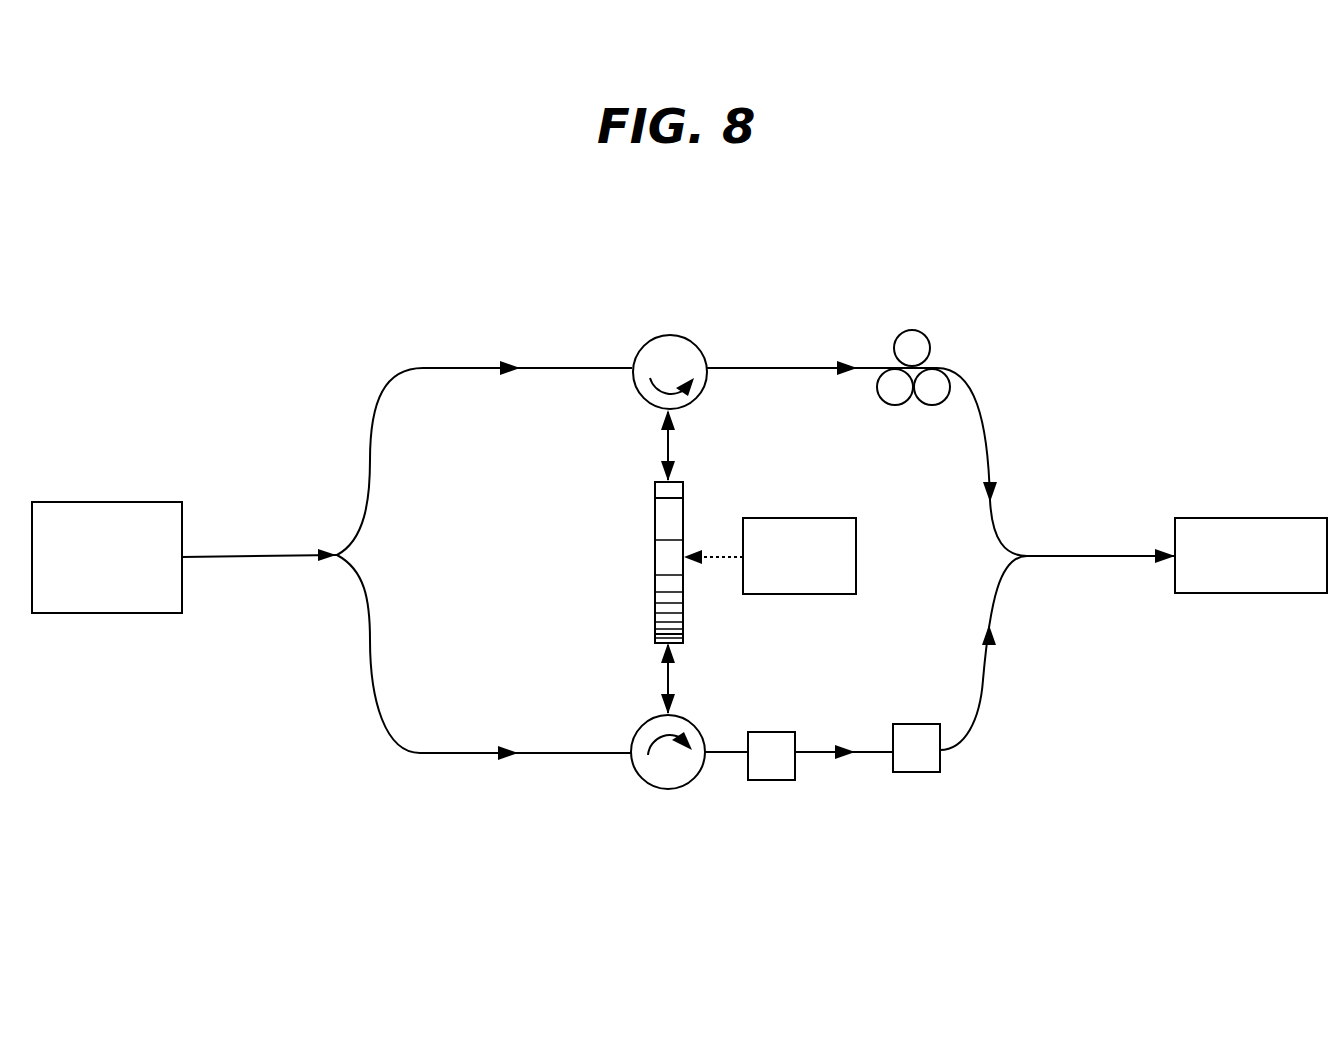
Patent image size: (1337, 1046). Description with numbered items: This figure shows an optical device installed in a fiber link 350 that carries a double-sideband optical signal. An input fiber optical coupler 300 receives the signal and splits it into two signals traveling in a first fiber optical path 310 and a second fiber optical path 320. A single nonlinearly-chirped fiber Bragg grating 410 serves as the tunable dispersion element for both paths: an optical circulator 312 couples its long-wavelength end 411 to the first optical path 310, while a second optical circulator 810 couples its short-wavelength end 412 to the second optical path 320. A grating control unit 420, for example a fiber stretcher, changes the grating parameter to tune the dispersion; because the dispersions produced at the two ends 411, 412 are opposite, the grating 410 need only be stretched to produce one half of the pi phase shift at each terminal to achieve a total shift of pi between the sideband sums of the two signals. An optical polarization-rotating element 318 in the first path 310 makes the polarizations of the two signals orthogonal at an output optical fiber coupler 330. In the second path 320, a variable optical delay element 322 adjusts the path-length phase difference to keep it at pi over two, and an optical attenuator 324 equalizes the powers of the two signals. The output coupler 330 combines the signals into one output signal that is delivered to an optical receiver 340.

The input fiber optical coupler 300 is at (337, 553).
The first fiber optical path 310 is at (385, 405).
The optical circulator 312 is at (641, 404).
The optical polarization-rotating element 318 is at (930, 350).
The second fiber optical path 320 is at (370, 612).
The variable optical delay element 322 is at (765, 780).
The optical attenuator 324 is at (912, 772).
The output optical fiber coupler 330 is at (1030, 558).
The optical receiver 340 is at (1232, 594).
The fiber link 350 is at (103, 614).
The nonlinearly-chirped fiber Bragg grating 410 is at (655, 530).
The long-wavelength end 411 is at (683, 488).
The short-wavelength end 412 is at (655, 636).
The grating control unit 420 is at (858, 556).
The second optical circulator 810 is at (650, 787).